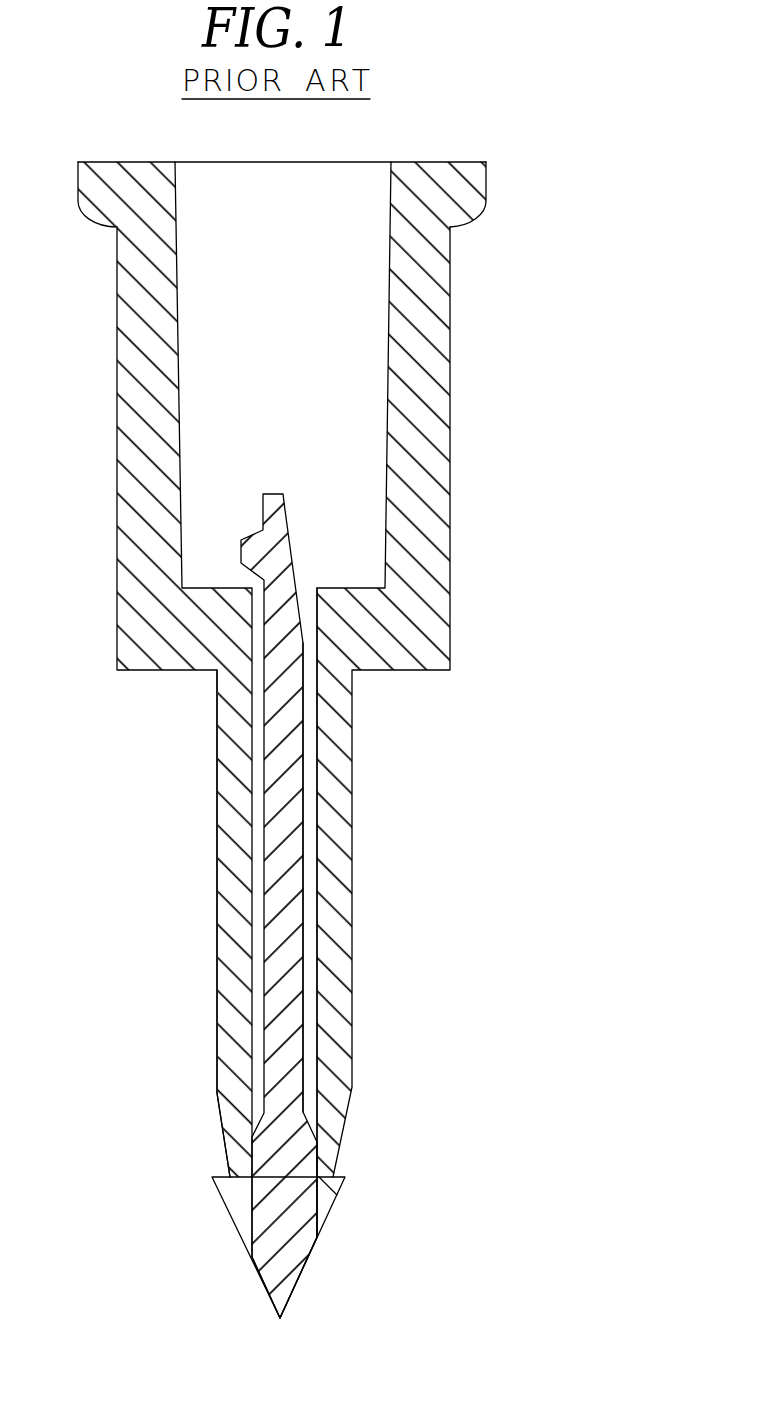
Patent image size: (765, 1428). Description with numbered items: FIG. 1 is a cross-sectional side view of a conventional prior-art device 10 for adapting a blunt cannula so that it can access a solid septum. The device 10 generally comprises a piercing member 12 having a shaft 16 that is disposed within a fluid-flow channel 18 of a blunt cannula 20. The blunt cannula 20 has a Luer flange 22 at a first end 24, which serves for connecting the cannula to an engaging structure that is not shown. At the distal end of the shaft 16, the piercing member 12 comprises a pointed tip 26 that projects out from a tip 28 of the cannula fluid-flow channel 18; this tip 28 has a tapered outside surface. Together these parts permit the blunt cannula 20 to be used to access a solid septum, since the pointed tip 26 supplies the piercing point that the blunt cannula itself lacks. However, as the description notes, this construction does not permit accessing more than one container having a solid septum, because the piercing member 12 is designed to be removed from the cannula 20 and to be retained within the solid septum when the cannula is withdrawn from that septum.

The device 10 is at (482, 338).
The piercing member 12 is at (305, 878).
The shaft 16 is at (277, 997).
The fluid-flow channel 18 is at (318, 972).
The blunt cannula 20 is at (175, 770).
The Luer flange 22 is at (488, 177).
The first end 24 is at (444, 162).
The pointed tip 26 is at (281, 1318).
The tip of the cannula fluid-flow channel 28 is at (333, 1200).